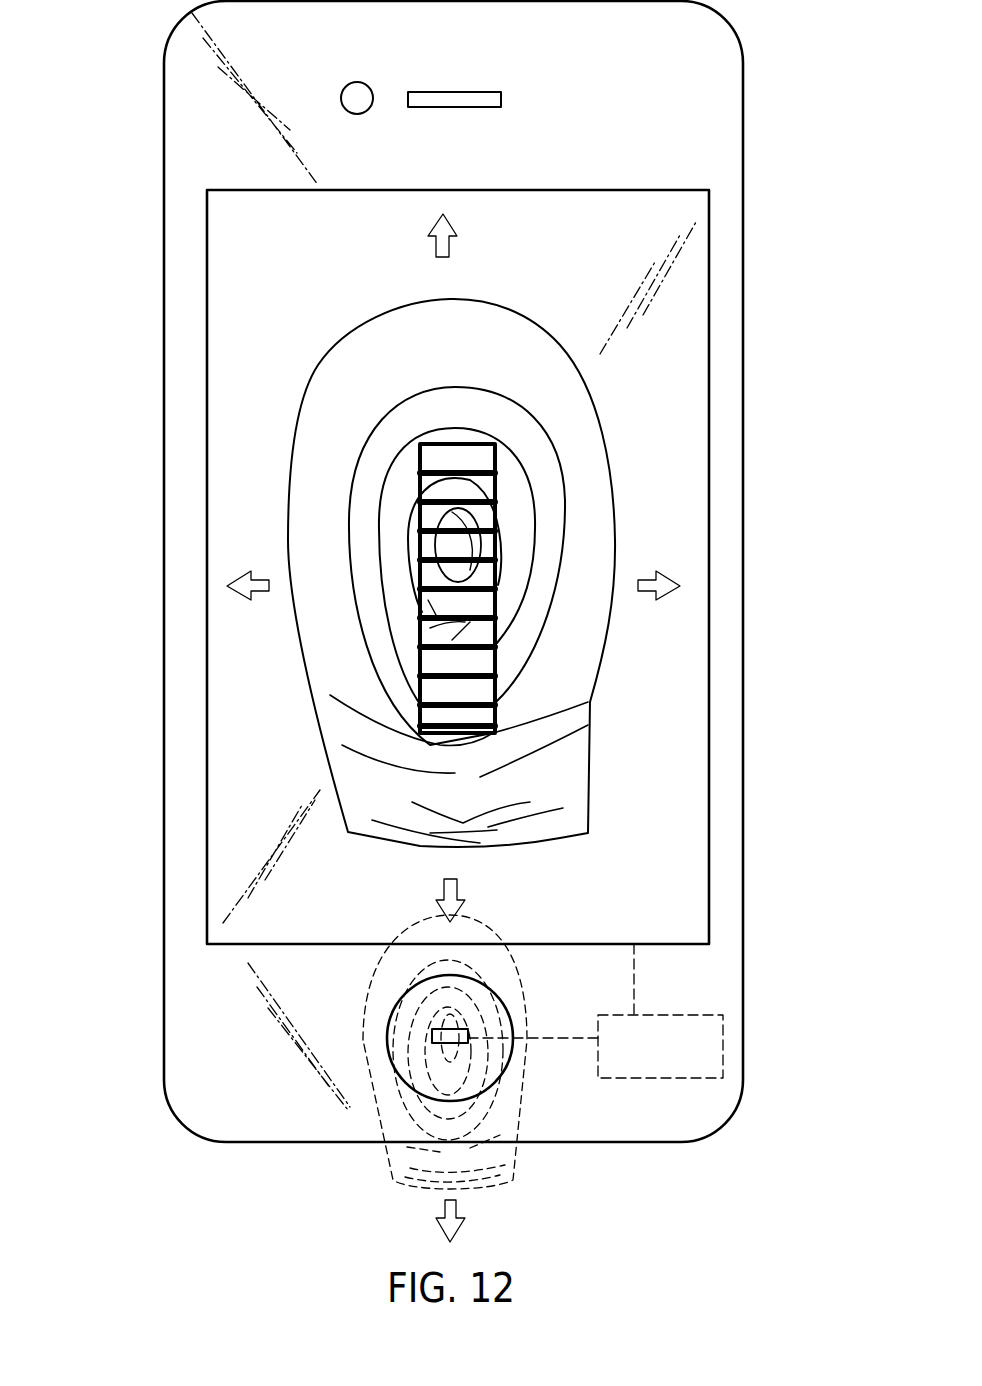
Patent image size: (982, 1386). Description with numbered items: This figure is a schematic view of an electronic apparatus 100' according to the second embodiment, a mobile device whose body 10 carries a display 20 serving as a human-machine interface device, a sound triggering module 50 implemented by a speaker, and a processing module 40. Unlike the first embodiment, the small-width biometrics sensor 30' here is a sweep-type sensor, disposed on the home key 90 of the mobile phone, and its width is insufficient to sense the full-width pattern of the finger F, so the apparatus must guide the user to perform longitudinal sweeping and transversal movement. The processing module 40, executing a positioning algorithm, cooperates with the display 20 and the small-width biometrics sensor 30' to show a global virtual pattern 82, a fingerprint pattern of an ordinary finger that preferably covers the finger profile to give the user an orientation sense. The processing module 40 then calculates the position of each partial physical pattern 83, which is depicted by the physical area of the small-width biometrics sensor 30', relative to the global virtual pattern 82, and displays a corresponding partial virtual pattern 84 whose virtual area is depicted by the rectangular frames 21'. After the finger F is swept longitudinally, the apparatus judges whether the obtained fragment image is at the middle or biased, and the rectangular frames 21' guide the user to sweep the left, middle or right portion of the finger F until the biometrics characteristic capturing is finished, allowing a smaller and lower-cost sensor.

The electronic apparatus 100' is at (94, 206).
The body 10 is at (178, 543).
The display 20 is at (230, 378).
The sound triggering module 50 is at (497, 99).
The rectangular frame 21' is at (423, 480).
The global virtual pattern 82 is at (542, 422).
The partial virtual pattern 84 is at (478, 520).
The small-width biometrics sensor 30' is at (382, 1000).
The partial physical pattern 83 is at (440, 1046).
The home key 90 is at (508, 1063).
The processing module 40 is at (723, 1060).
The finger F is at (383, 1155).